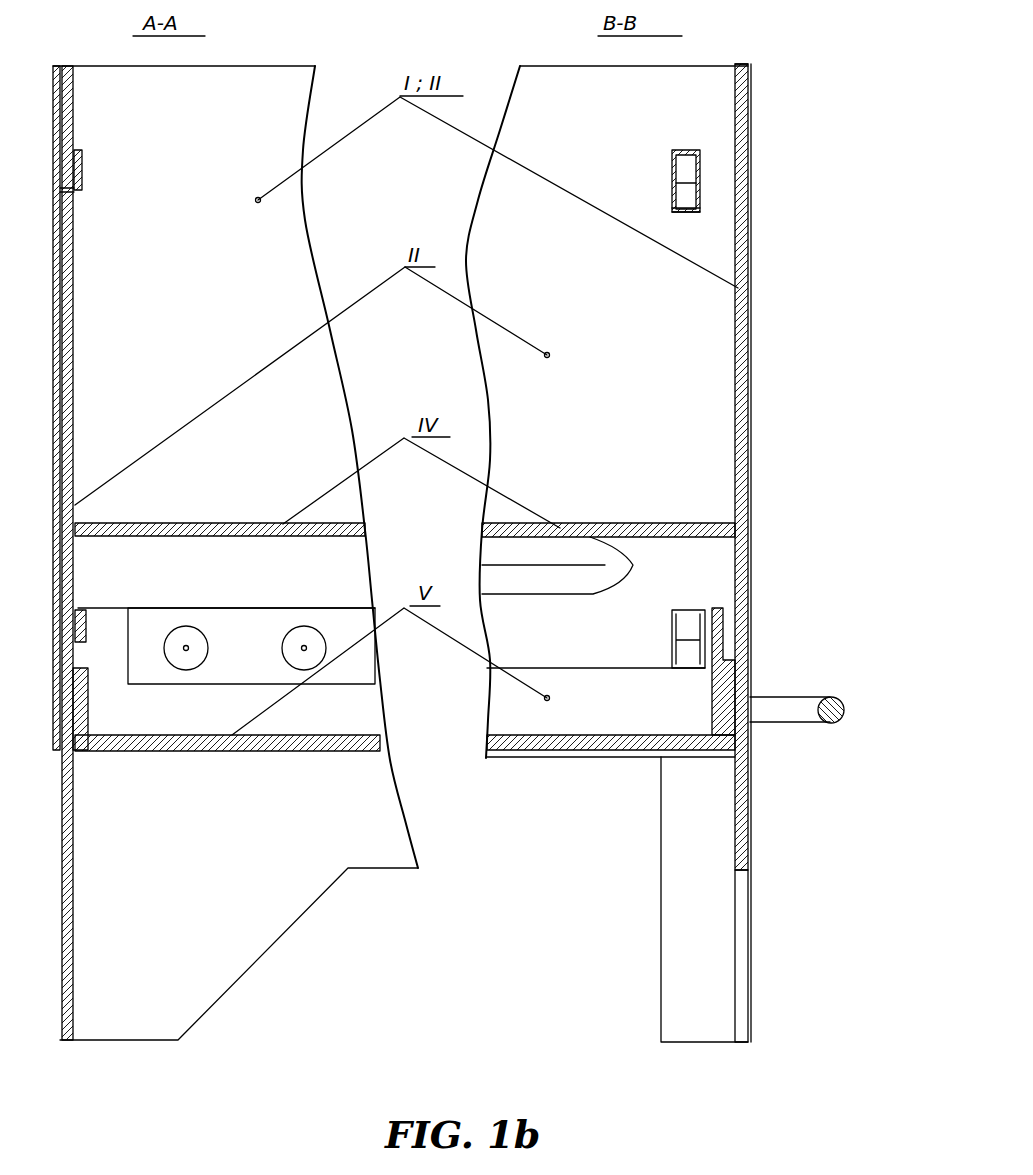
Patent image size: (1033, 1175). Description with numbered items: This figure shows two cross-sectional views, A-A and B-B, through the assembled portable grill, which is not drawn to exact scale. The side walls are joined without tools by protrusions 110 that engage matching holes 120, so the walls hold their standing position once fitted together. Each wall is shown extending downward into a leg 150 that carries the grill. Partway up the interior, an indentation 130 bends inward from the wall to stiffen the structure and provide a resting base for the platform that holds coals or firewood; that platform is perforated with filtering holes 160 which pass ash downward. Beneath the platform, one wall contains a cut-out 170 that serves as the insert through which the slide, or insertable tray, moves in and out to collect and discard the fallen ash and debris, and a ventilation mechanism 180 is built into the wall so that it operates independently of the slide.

The protrusion 110 is at (82, 152).
The hole 120 is at (78, 192).
The indentation 130 is at (570, 545).
The leg 150 is at (122, 882).
The filtering hole 160 is at (220, 518).
The cut-out 170 is at (93, 595).
The ventilation mechanism 180 is at (180, 625).